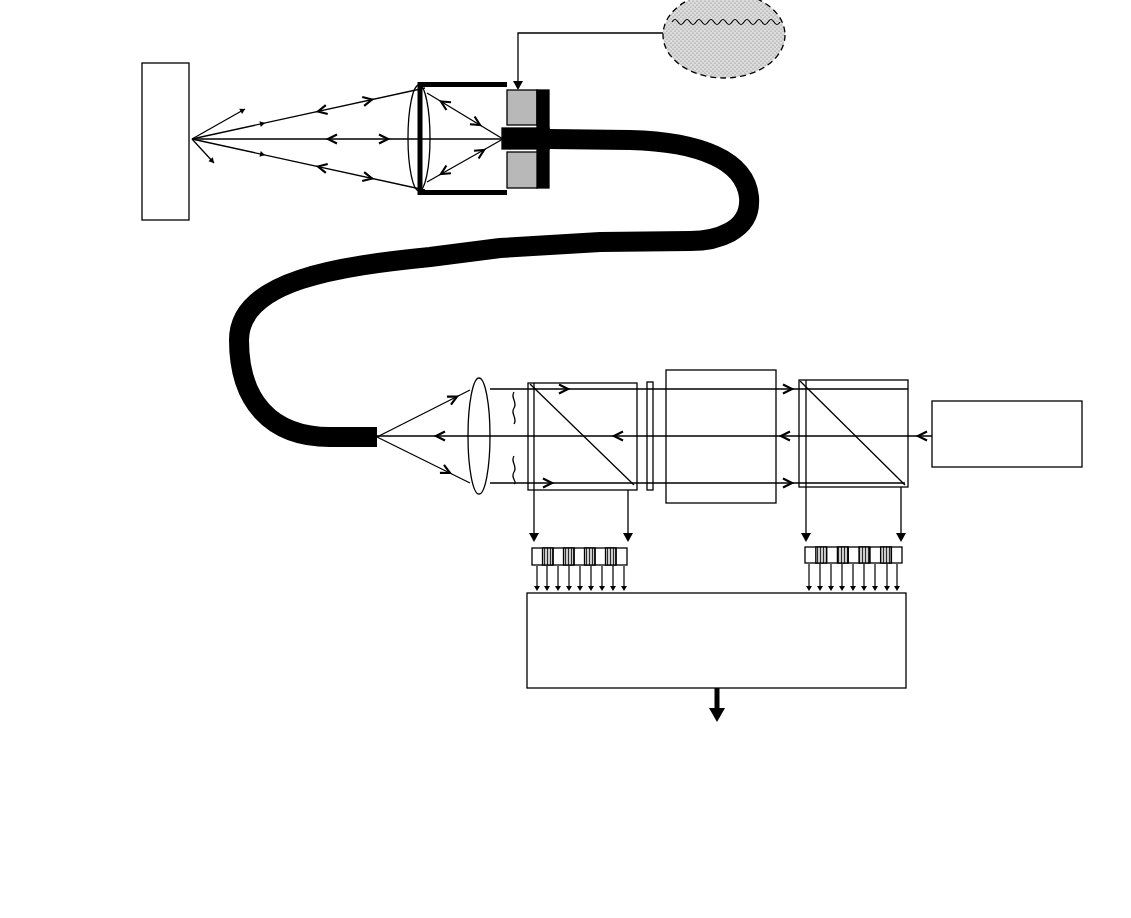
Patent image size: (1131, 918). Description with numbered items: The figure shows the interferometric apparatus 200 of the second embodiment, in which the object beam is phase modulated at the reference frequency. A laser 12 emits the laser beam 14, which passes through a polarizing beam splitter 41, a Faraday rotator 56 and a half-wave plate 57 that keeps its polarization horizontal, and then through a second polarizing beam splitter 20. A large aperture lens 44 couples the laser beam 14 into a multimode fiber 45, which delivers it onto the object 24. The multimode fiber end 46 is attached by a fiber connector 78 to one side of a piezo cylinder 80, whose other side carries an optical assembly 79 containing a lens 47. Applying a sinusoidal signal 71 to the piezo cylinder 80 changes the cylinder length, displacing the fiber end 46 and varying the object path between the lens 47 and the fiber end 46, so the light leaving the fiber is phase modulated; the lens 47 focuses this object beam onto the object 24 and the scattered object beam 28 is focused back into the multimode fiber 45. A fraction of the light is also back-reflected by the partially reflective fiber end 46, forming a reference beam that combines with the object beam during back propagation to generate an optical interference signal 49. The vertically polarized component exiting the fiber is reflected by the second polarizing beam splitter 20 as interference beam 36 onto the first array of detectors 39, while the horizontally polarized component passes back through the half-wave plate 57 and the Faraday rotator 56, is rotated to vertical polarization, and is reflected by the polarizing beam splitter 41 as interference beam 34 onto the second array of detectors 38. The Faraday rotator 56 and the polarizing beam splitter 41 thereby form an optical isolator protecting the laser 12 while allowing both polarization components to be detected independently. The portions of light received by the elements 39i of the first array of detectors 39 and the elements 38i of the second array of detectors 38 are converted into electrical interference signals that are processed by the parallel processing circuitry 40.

The interferometric apparatus 200 is at (1086, 55).
The object 24 is at (178, 205).
The scattered object beam 28 is at (400, 90).
The optical assembly 79 is at (452, 82).
The lens 47 is at (420, 182).
The multimode fiber end 46 is at (492, 190).
The piezo cylinder 80 is at (533, 90).
The fiber connector 78 is at (550, 167).
The sinusoidal signal 71 is at (785, 42).
The multimode fiber 45 is at (760, 193).
The large aperture lens 44 is at (470, 488).
The optical interference signal 49 is at (517, 438).
The second polarizing beam splitter 20 is at (586, 417).
The interference beam 36 is at (627, 518).
The half-wave plate 57 is at (657, 378).
The Faraday rotator 56 is at (722, 377).
The polarizing beam splitter 41 is at (871, 393).
The interference beam 34 is at (898, 513).
The laser beam 14 is at (913, 437).
The laser 12 is at (948, 410).
The first array of detectors 39 is at (526, 553).
The elements of the detector array 39i is at (550, 554).
The second array of detectors 38 is at (800, 553).
The detector array element outputs 38i is at (886, 560).
The parallel processing circuitry 40 is at (545, 659).